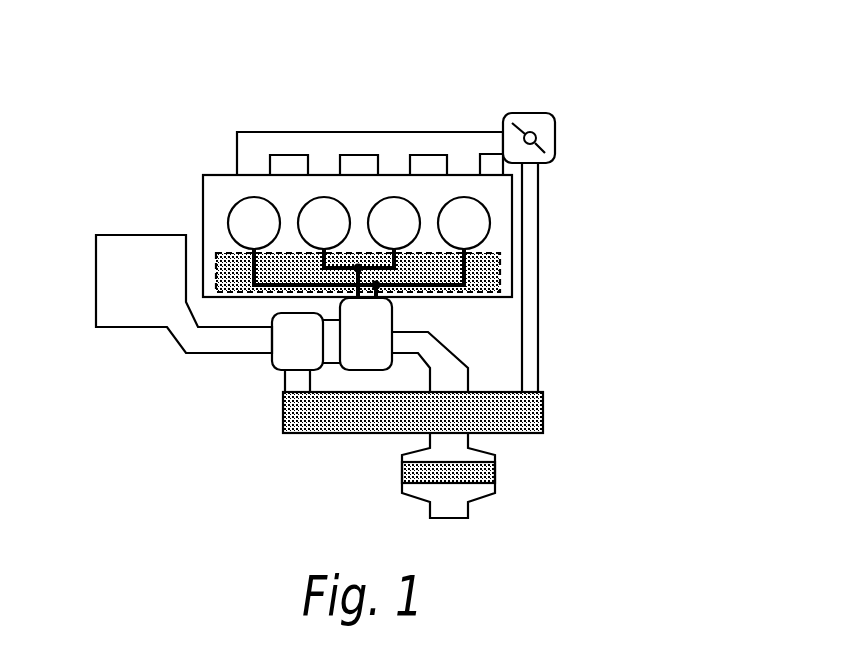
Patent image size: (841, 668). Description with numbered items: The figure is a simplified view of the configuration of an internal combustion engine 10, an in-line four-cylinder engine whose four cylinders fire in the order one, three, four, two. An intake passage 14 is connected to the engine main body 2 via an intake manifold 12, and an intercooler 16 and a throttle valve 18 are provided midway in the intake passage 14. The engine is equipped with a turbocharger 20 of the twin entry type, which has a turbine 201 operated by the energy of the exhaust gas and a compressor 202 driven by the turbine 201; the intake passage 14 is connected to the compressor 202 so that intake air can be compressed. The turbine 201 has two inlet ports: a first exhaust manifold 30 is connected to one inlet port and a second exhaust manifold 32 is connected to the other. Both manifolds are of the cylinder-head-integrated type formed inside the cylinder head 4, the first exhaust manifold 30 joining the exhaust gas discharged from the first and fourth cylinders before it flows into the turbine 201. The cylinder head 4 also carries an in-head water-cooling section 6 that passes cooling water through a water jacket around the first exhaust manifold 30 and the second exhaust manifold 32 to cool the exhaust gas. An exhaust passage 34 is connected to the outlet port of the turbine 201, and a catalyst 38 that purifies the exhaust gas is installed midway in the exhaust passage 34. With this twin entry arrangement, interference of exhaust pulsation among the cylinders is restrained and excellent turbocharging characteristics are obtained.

The internal combustion engine 10 is at (127, 80).
The engine main body 2 is at (190, 205).
The cylinder head 4 is at (216, 174).
The intake manifold 12 is at (312, 131).
The throttle valve 18 is at (503, 126).
The intake passage 14 is at (172, 343).
The in-head water-cooling section 6 is at (503, 284).
The first exhaust manifold 30 is at (500, 264).
The second exhaust manifold 32 is at (393, 294).
The turbocharger 20 is at (266, 383).
The compressor 202 is at (278, 364).
The turbine 201 is at (365, 369).
The exhaust passage 34 is at (466, 376).
The intercooler 16 is at (310, 435).
The catalyst 38 is at (497, 472).